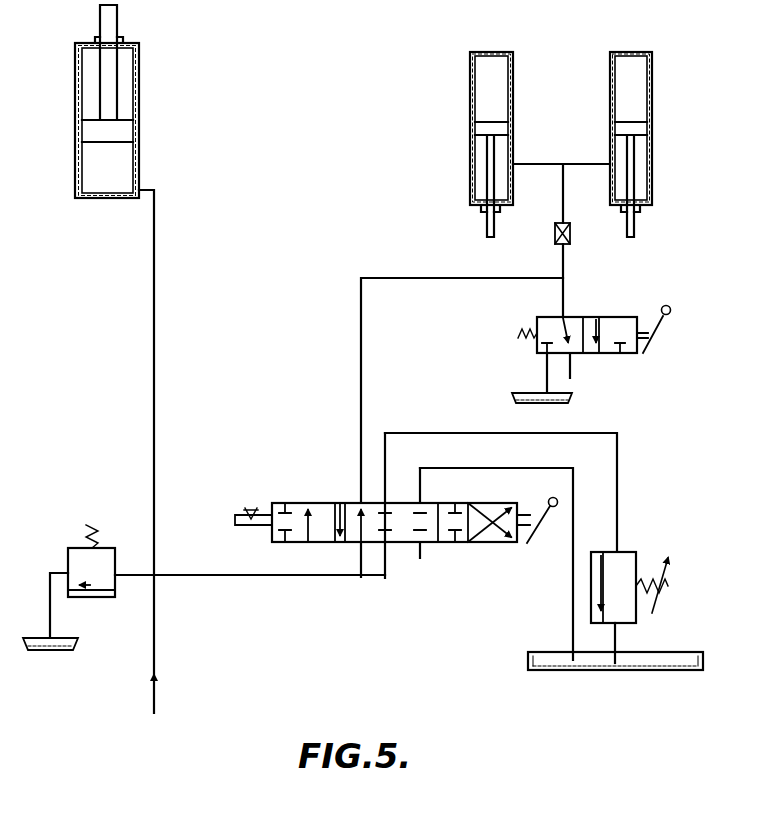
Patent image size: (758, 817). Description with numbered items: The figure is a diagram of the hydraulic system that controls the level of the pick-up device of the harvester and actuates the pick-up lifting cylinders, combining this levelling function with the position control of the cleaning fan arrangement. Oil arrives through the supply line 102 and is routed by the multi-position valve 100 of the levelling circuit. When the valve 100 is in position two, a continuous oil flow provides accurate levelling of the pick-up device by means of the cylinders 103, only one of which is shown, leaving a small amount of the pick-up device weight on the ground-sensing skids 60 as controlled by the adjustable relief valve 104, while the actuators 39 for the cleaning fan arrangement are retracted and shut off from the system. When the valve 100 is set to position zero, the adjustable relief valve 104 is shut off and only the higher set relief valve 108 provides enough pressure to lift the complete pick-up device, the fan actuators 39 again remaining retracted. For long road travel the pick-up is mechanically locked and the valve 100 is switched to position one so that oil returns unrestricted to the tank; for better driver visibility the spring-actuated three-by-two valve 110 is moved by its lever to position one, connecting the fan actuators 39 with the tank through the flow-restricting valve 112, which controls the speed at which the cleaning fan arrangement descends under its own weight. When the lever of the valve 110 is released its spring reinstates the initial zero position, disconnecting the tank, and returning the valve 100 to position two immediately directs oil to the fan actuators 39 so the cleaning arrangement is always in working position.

The cylinders 103 is at (136, 172).
The line 102 is at (151, 664).
The actuators 39 is at (528, 90).
The flow-restricting valve 112 is at (578, 242).
The spring-actuated 3/2 valve 110 is at (614, 356).
The valve 100 is at (491, 549).
The adjustable relief valve 104 is at (636, 618).
The ground-sensing skids 60 is at (597, 672).
The higher set relief valve 108 is at (93, 598).